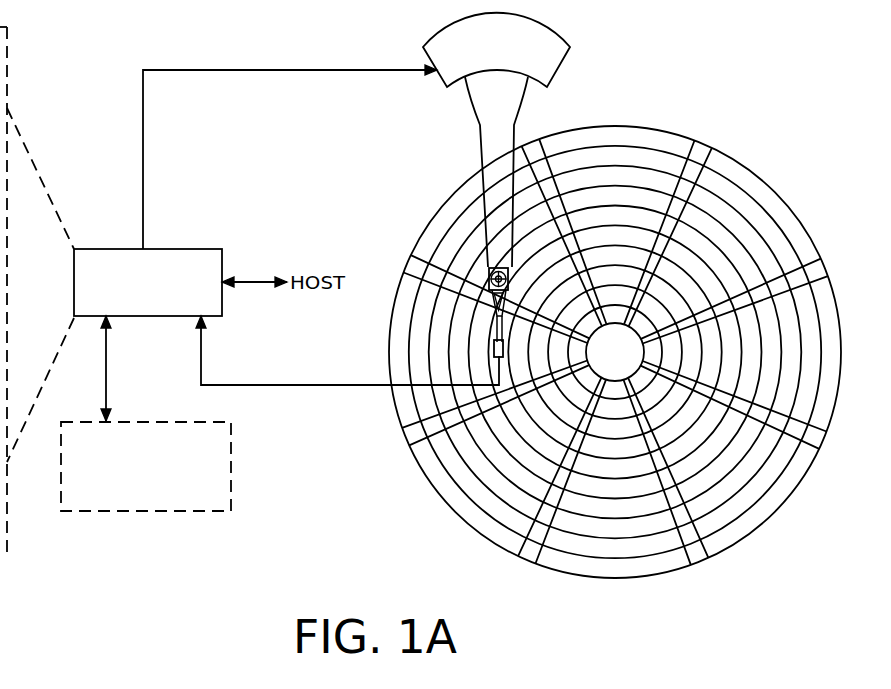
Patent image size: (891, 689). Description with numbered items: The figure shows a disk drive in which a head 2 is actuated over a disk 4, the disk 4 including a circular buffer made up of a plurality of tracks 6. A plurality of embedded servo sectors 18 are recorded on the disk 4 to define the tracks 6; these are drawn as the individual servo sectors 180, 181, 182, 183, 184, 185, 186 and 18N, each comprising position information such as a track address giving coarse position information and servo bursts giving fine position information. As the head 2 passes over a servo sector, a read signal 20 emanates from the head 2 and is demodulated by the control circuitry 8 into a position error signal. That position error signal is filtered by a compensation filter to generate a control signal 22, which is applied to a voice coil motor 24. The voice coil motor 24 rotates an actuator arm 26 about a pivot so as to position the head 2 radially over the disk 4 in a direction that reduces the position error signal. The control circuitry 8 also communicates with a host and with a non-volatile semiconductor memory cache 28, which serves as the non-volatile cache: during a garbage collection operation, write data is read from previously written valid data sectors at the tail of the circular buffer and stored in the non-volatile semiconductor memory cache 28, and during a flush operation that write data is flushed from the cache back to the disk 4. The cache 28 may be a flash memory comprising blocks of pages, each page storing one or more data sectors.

The head 2 is at (490, 354).
The disk 4 is at (624, 350).
The tracks 6 is at (613, 158).
The control circuitry 8 is at (186, 249).
The embedded servo sectors 18 is at (624, 359).
The embedded servo sector 180 is at (702, 150).
The embedded servo sector 181 is at (817, 272).
The embedded servo sector 182 is at (817, 441).
The embedded servo sector 183 is at (695, 563).
The embedded servo sector 184 is at (530, 557).
The embedded servo sector 185 is at (410, 440).
The embedded servo sector 186 is at (412, 256).
The embedded servo sector 18N is at (536, 148).
The read signal 20 is at (283, 385).
The control signal 22 is at (143, 145).
The voice coil motor 24 is at (442, 78).
The actuator arm 26 is at (480, 157).
The non-volatile semiconductor memory cache 28 is at (150, 512).